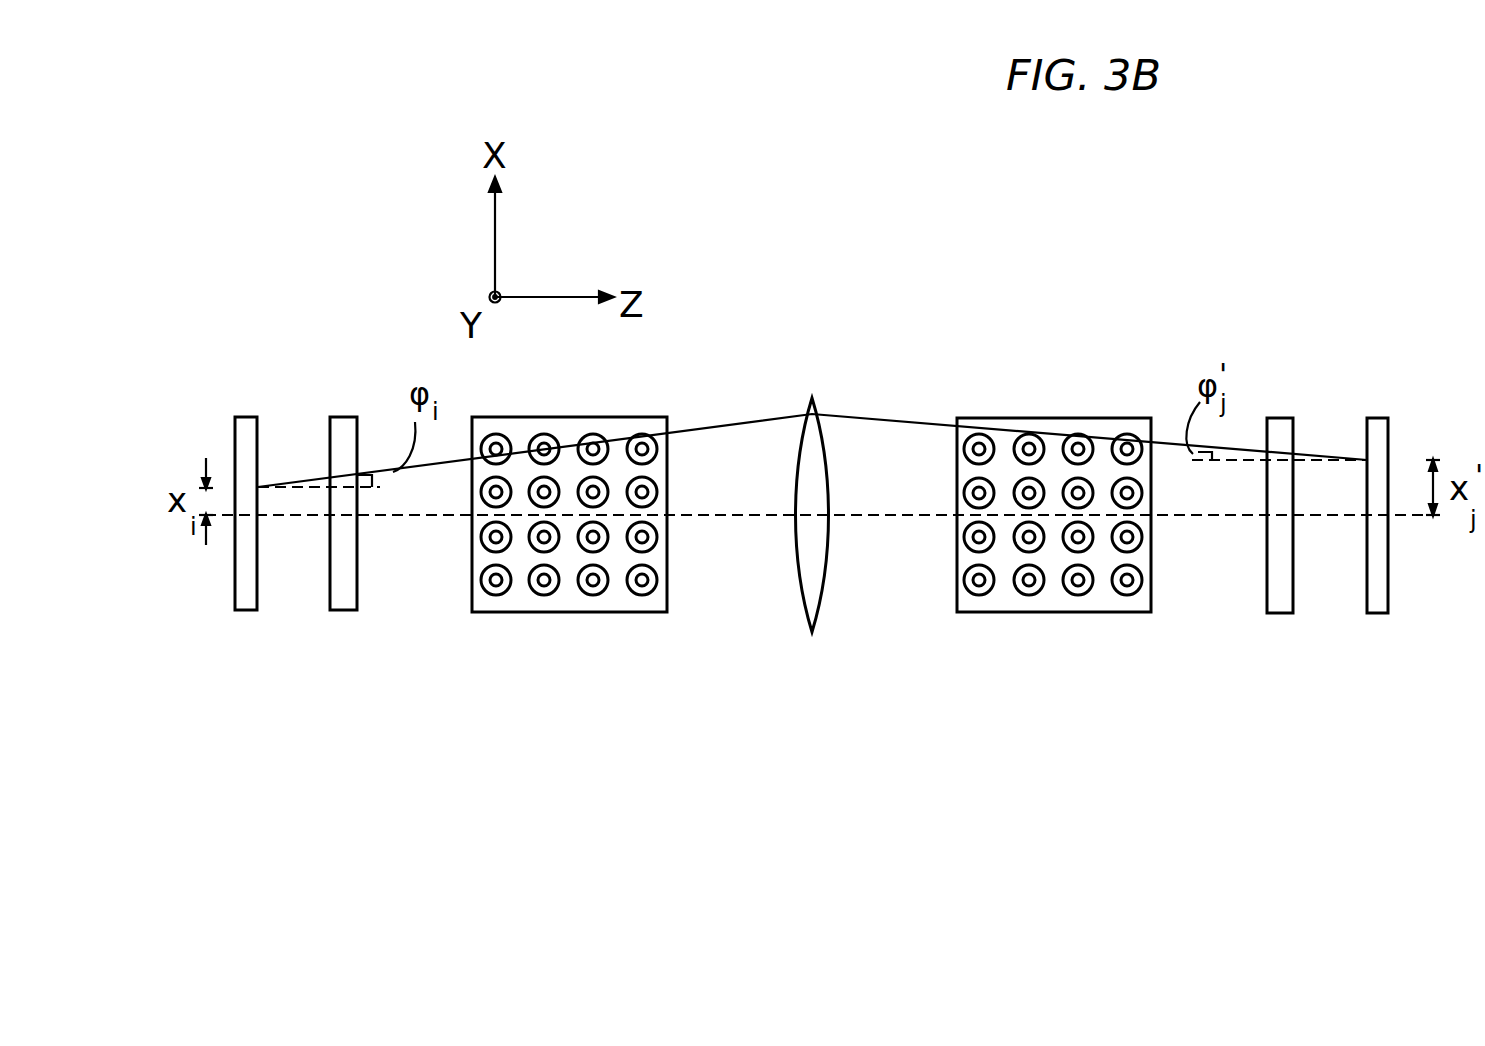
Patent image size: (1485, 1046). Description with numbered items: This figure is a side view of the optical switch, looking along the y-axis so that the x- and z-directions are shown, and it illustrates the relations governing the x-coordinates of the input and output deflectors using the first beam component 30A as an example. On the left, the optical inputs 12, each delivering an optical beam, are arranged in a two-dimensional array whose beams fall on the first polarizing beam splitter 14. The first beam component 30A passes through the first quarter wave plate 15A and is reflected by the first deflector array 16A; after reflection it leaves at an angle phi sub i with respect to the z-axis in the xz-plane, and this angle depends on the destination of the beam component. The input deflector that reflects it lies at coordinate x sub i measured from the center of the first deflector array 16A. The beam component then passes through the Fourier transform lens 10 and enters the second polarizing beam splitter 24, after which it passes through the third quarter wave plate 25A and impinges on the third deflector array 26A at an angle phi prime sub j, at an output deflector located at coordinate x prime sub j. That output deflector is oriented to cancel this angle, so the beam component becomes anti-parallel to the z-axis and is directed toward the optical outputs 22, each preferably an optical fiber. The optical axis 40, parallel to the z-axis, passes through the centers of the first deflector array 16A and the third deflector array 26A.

The Fourier transform lens 10 is at (818, 613).
The optical inputs 12 is at (650, 537).
The first polarizing beam splitter 14 is at (587, 573).
The first quarter wave plate 15A is at (337, 612).
The first deflector array 16A is at (245, 612).
The optical outputs 22 is at (1135, 538).
The second polarizing beam splitter 24 is at (1086, 568).
The third quarter wave plate 25A is at (1272, 613).
The third deflector array 26A is at (1372, 613).
The first beam component 30A is at (303, 477).
The optical axis 40 is at (392, 517).